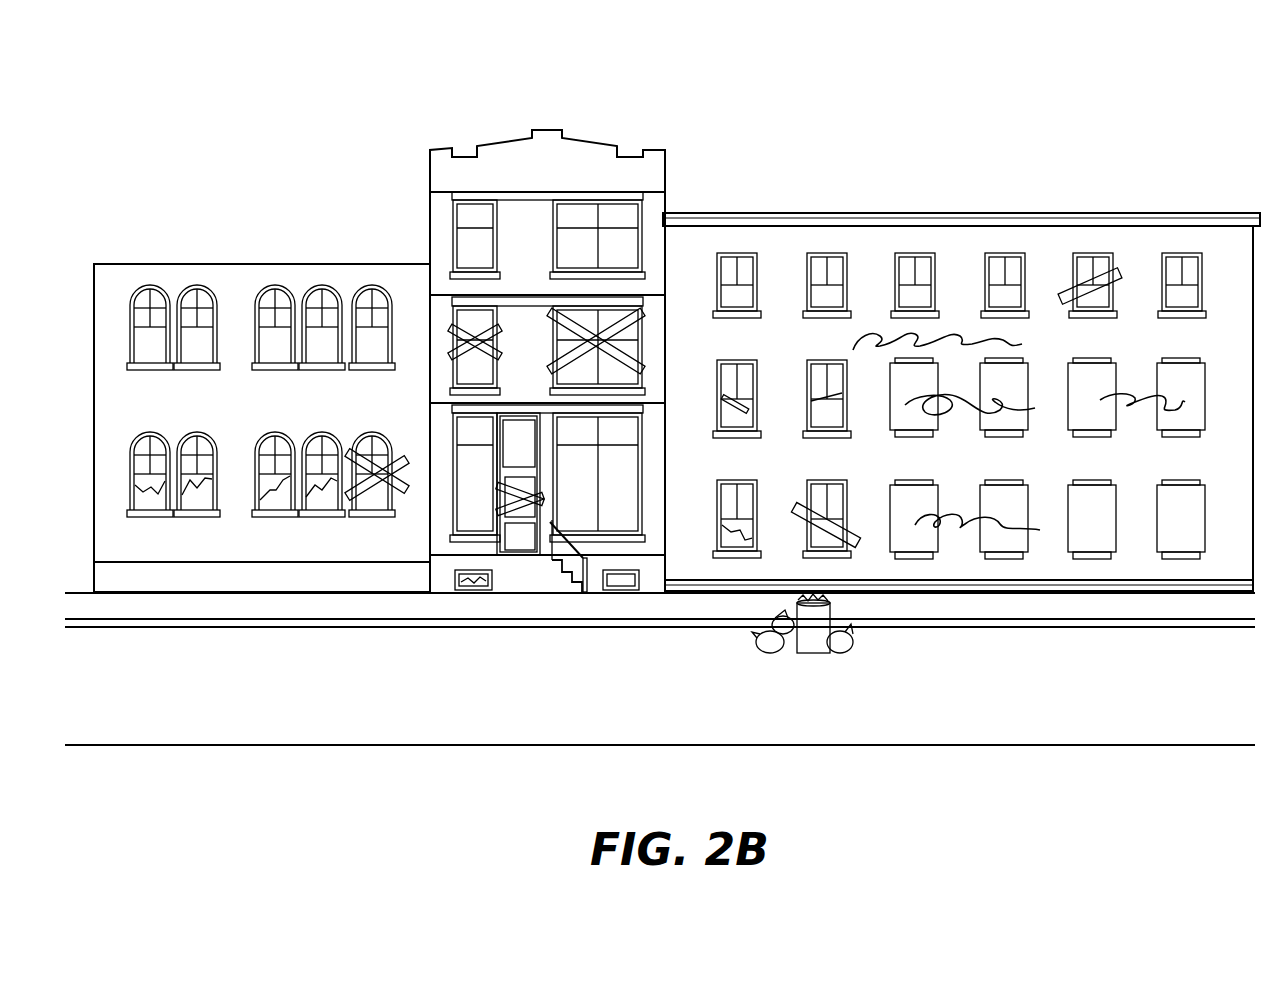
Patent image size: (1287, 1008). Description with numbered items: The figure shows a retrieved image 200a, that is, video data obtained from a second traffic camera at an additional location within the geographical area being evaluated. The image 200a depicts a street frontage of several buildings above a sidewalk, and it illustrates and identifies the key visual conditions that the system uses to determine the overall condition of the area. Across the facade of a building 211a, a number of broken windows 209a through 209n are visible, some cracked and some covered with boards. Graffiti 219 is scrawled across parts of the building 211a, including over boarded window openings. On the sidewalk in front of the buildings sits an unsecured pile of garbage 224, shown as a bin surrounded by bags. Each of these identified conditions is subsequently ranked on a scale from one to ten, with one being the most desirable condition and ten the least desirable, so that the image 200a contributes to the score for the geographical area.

The retrieved image 200a is at (150, 114).
The broken window 209a is at (138, 424).
The broken window 209n is at (1062, 288).
The building 211a is at (1081, 167).
The graffiti 219 is at (830, 340).
The unsecured pile of garbage 224 is at (794, 660).